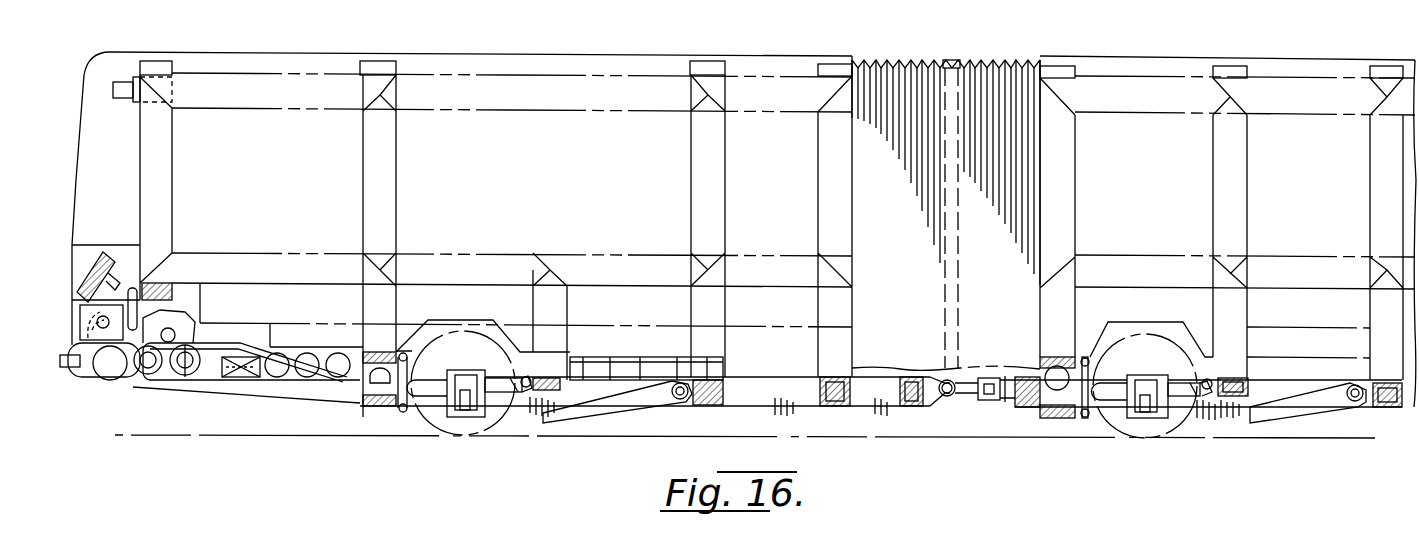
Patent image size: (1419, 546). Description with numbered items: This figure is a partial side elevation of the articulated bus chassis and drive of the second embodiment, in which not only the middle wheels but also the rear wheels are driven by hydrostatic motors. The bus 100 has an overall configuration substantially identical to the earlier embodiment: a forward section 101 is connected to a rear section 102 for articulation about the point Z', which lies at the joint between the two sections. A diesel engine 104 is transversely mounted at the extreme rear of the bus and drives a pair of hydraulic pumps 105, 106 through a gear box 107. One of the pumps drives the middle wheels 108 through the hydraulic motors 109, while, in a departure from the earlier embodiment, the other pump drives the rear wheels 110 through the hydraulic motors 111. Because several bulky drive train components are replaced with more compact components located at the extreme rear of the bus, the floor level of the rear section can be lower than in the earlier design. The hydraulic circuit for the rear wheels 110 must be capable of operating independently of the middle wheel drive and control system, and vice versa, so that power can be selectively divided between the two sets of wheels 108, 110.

The bus 100 is at (1314, 54).
The forward section 101 is at (1228, 60).
The rear section 102 is at (252, 53).
The diesel engine 104 is at (128, 378).
The hydraulic pump 105 is at (140, 374).
The hydraulic pump 106 is at (200, 372).
The gear box 107 is at (190, 328).
The middle wheels 108 is at (1185, 422).
The hydraulic motors 109 is at (1178, 380).
The rear wheels 110 is at (492, 423).
The hydraulic motors 111 is at (492, 375).
The articulation point Z' is at (972, 423).